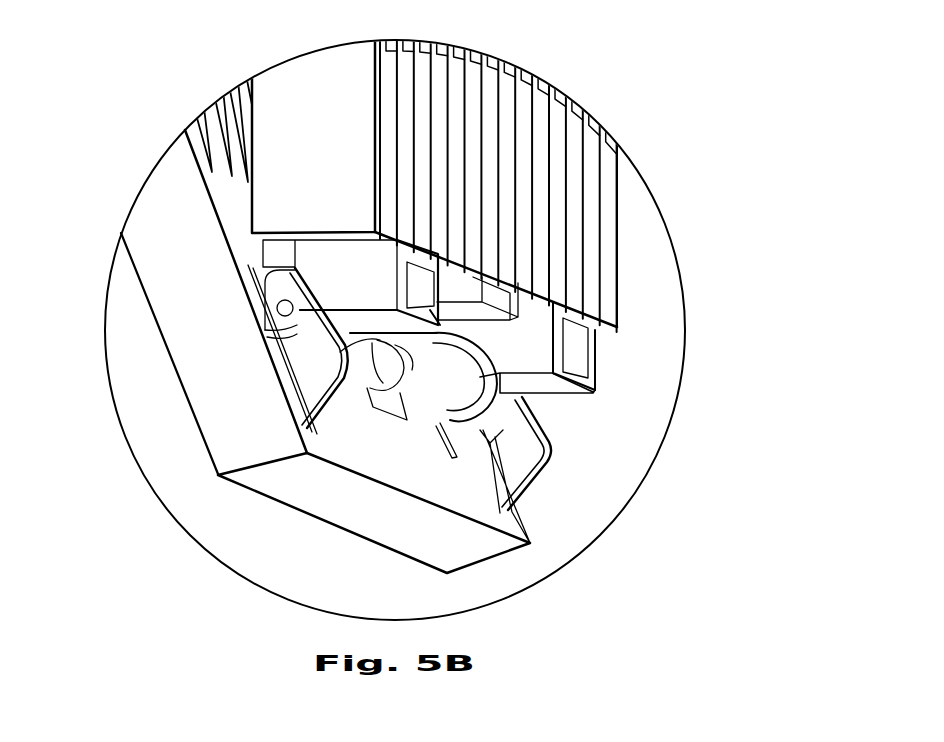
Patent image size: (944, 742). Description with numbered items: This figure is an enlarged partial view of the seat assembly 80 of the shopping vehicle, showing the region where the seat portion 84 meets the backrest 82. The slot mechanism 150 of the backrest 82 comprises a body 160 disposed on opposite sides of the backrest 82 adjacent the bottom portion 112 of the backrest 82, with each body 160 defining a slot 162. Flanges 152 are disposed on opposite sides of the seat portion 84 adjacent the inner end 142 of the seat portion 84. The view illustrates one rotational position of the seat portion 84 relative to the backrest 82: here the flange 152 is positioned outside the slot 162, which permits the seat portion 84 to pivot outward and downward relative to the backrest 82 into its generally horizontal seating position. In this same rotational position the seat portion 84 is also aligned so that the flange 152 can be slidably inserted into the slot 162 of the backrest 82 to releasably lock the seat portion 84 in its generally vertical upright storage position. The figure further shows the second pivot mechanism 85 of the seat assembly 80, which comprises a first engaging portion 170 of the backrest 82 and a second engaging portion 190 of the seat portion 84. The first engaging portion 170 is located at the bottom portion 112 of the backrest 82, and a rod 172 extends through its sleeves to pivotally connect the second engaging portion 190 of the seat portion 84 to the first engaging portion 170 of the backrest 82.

The seat assembly 80 is at (138, 108).
The backrest 82 is at (146, 312).
The seat portion 84 is at (324, 74).
The second pivot mechanism 85 is at (473, 464).
The bottom portion 112 is at (214, 470).
The inner end 142 is at (292, 185).
The slot mechanism 150 is at (286, 380).
The flange 152 is at (248, 266).
The body 160 is at (295, 422).
The slot 162 is at (272, 338).
The first engaging portion 170 is at (438, 406).
The rod 172 is at (277, 308).
The second engaging portion 190 is at (397, 390).